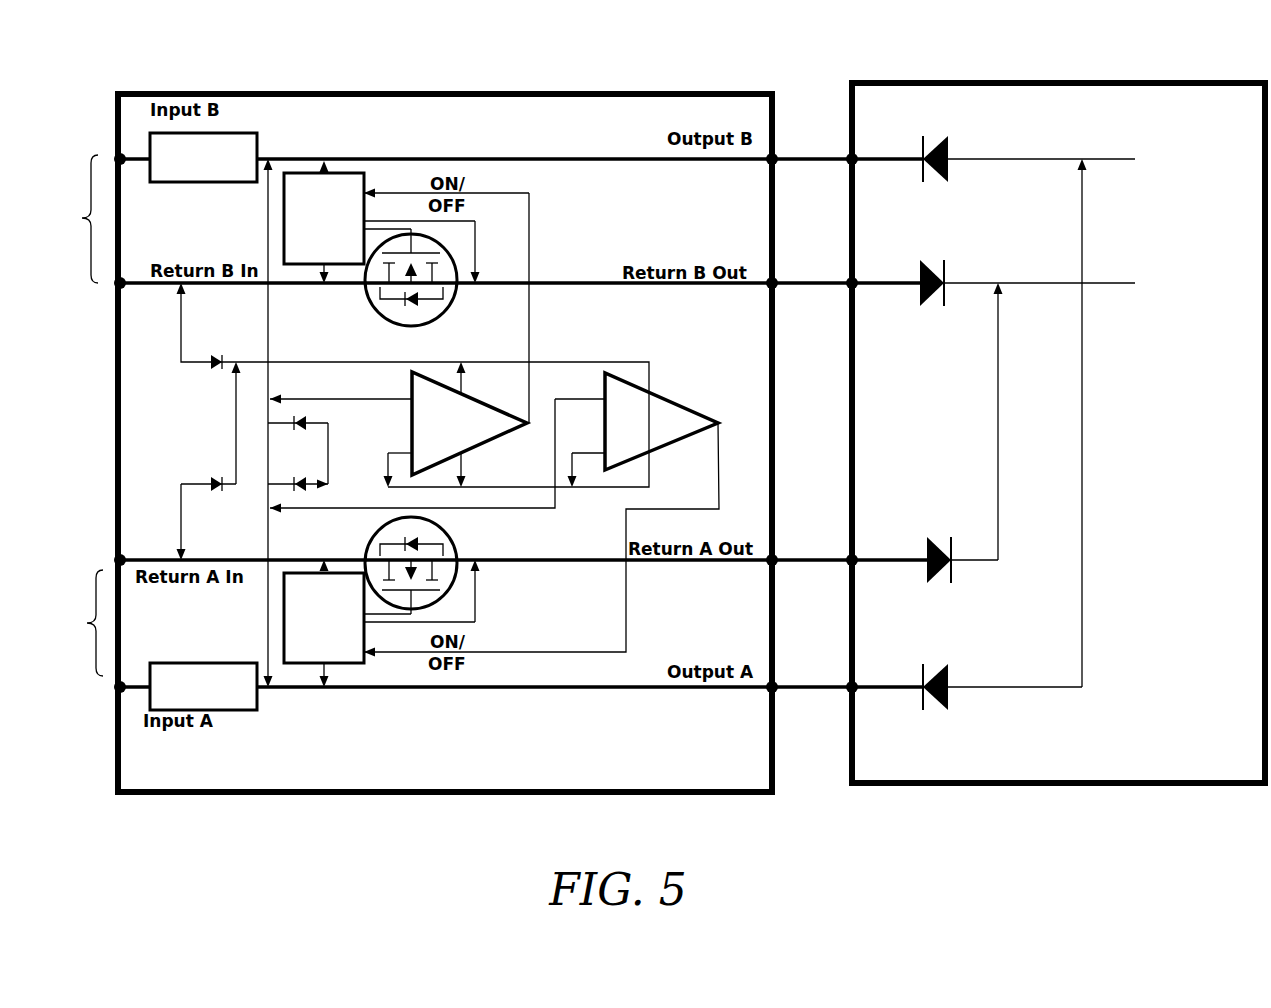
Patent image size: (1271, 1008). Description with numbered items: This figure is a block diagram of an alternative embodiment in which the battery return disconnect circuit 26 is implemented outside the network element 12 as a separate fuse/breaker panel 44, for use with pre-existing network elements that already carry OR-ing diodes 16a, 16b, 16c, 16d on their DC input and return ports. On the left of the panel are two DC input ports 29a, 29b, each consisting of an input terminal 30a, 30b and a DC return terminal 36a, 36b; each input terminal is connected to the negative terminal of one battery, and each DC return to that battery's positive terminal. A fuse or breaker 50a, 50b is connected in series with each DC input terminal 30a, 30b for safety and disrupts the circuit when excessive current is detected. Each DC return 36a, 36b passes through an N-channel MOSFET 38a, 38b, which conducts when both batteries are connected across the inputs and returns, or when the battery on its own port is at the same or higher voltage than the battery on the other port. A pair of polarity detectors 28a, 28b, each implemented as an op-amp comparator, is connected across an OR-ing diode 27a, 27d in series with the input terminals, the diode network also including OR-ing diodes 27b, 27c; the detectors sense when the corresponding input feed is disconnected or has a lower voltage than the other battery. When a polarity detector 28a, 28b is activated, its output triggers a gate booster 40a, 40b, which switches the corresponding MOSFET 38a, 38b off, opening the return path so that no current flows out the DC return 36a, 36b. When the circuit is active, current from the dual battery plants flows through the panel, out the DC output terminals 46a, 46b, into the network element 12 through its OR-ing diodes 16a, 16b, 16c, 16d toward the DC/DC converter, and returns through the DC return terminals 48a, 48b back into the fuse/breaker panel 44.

The network element 12 is at (1168, 83).
The battery return disconnect circuit 26 is at (535, 113).
The fuse/breaker panel 44 is at (658, 94).
The fuse or breaker 50b is at (258, 150).
The fuse or breaker 50a is at (258, 695).
The gate booster 40b is at (382, 222).
The gate booster 40a is at (382, 623).
The N-channel MOSFET 38b is at (452, 310).
The N-channel MOSFET 38a is at (446, 536).
The polarity detector 28b is at (470, 452).
The polarity detector 28a is at (667, 398).
The OR-ing diode 27a is at (297, 432).
The OR-ing diode 27b is at (215, 371).
The OR-ing diode 27c is at (212, 477).
The OR-ing diode 27d is at (306, 478).
The input terminal 30b is at (117, 159).
The DC return terminal 36b is at (117, 285).
The DC return terminal 36a is at (117, 558).
The input terminal 30a is at (117, 689).
The DC input port 29b is at (88, 197).
The DC input port 29a is at (90, 602).
The DC output terminal 46b is at (776, 163).
The DC return terminal 48b is at (776, 287).
The DC return terminal 48a is at (776, 564).
The DC output terminal 46a is at (776, 691).
The OR-ing diode 16a is at (950, 137).
The OR-ing diode 16b is at (944, 264).
The OR-ing diode 16c is at (930, 582).
The OR-ing diode 16d is at (948, 712).